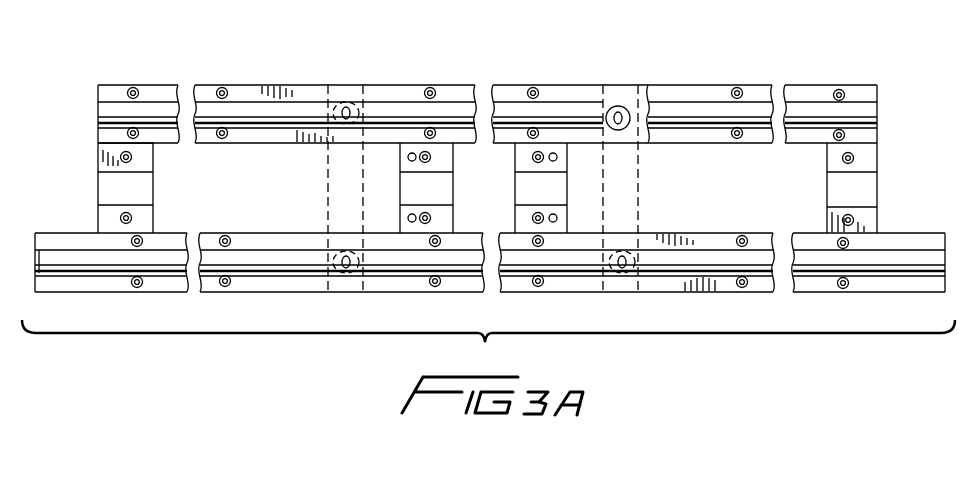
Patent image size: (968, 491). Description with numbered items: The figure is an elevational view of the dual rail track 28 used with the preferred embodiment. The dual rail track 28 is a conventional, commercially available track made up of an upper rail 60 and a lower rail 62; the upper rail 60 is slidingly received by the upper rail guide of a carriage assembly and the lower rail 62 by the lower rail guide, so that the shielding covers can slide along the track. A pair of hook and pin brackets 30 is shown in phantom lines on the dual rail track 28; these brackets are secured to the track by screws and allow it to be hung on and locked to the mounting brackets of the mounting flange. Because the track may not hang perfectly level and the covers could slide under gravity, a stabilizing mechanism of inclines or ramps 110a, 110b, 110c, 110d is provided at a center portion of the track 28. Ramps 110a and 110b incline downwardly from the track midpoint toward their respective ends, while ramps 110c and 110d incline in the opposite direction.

The dual rail track 28 is at (849, 134).
The hook and pin brackets 30 is at (327, 170).
The upper rail 60 is at (875, 113).
The lower rail 62 is at (947, 262).
The ramp 110a is at (98, 198).
The ramp 110b is at (455, 183).
The ramp 110c is at (515, 195).
The ramp 110d is at (876, 186).